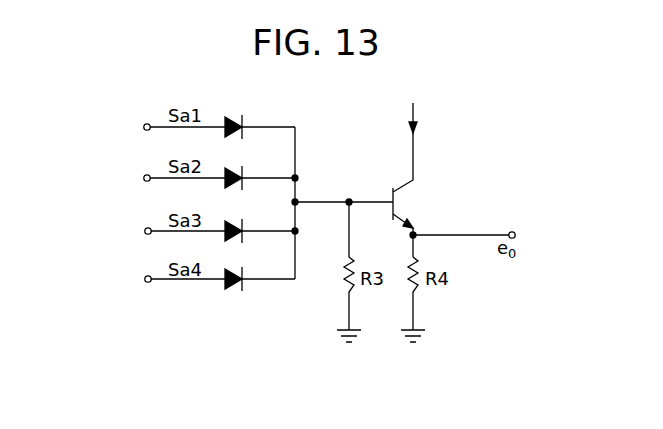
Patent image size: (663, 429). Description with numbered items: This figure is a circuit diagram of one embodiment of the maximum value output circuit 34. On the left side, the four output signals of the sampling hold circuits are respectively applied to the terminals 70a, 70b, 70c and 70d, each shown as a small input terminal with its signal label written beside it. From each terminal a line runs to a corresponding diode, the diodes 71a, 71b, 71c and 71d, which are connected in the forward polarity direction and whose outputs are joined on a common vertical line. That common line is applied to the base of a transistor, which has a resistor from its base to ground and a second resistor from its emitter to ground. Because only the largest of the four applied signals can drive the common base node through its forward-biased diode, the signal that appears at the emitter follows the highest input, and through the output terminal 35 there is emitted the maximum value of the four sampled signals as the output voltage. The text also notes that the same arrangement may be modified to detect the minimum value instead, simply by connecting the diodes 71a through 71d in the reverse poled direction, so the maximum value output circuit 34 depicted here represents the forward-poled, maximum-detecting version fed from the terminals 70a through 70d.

The terminal 70a is at (144, 125).
The terminal 70b is at (144, 177).
The terminal 70c is at (145, 231).
The terminal 70d is at (146, 277).
The diode 71a is at (248, 108).
The diode 71b is at (244, 166).
The diode 71c is at (244, 219).
The diode 71d is at (244, 267).
The maximum value output circuit 34 is at (490, 125).
The output terminal 35 is at (512, 232).